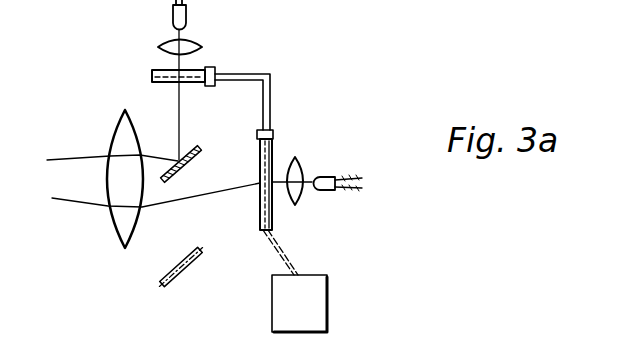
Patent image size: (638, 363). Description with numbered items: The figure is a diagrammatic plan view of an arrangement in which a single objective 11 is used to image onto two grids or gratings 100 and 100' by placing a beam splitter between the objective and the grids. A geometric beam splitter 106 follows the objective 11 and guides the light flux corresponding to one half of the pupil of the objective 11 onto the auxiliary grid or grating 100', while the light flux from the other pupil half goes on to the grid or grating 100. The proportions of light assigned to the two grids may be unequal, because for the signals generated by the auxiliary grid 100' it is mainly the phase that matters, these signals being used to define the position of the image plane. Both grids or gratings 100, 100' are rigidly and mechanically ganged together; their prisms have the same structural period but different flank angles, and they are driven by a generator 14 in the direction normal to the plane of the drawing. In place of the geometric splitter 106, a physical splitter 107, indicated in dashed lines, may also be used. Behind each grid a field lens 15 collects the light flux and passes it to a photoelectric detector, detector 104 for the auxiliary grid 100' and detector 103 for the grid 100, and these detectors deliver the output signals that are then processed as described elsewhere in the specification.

The objective 11 is at (122, 222).
The generator 14 is at (302, 315).
The field lens 15 is at (160, 45).
The grid or grating 100 is at (295, 207).
The auxiliary grid or grating 100' is at (184, 100).
The photoelectric detector 103 is at (322, 182).
The photoelectric detector 104 is at (172, 14).
The geometric beam splitter 106 is at (214, 139).
The physical splitter 107 is at (183, 268).